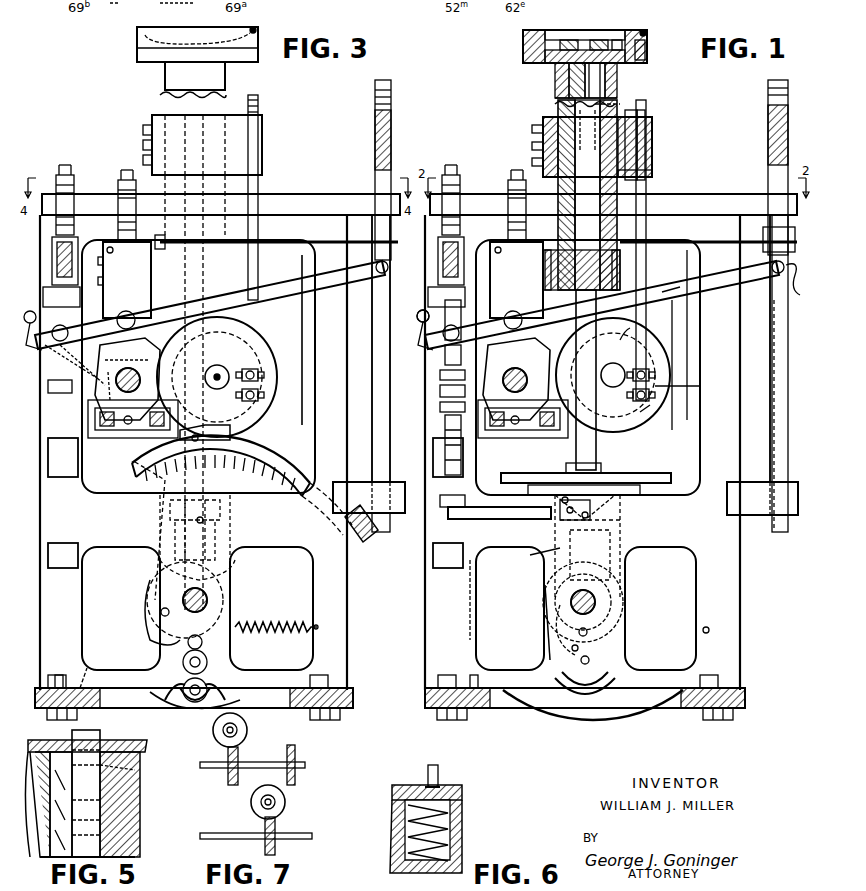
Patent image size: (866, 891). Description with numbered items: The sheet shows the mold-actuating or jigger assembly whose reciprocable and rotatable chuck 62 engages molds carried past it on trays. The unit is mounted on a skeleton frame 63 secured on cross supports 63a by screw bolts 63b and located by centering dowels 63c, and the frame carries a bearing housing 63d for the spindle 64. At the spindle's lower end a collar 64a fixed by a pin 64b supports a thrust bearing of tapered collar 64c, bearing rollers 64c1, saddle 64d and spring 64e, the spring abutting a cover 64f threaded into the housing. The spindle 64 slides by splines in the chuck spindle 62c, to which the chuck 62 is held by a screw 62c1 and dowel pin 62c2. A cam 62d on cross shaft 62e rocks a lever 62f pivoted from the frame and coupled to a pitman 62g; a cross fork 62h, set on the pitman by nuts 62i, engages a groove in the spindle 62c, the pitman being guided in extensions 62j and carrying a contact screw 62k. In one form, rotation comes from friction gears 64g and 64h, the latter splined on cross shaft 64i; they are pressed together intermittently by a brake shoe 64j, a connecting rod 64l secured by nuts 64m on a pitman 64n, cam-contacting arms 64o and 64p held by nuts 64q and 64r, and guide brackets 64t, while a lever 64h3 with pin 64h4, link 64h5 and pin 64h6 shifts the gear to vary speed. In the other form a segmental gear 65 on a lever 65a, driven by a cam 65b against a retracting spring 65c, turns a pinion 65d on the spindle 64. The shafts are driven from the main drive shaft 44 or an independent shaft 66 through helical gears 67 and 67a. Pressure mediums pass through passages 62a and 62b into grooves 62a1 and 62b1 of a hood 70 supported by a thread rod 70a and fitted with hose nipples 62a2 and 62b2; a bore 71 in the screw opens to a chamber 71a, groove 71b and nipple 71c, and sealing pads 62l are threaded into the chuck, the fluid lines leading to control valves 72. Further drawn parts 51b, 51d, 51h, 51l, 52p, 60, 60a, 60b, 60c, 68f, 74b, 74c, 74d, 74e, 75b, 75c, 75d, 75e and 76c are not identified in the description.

In FIG. 7, the main drive shaft 44 is at (265, 762).
In FIG. 3, the stud 51b is at (78, 240).
In FIG. 1, the stud 51b is at (464, 240).
In FIG. 1, the pivot pin 51d is at (430, 318).
In FIG. 3, the cam bracket 51h is at (215, 695).
In FIG. 3, the curved plate 51l is at (200, 712).
In FIG. 1, the slide 52p is at (429, 330).
In FIG. 3, the pin 60 is at (256, 30).
In FIG. 1, the pin 60 is at (646, 33).
In FIG. 6, the pin 60 is at (438, 770).
In FIG. 6, the spring housing 60a is at (462, 815).
In FIG. 6, the cap 60b is at (462, 795).
In FIG. 6, the pin head 60c is at (425, 787).
In FIG. 3, the chuck 62 is at (137, 42).
In FIG. 1, the chuck 62 is at (523, 42).
In FIG. 1, the passage 62a is at (569, 85).
In FIG. 1, the annular air groove 62a1 is at (652, 122).
In FIG. 1, the hose nipple 62a2 is at (532, 129).
In FIG. 1, the passage 62b is at (617, 88).
In FIG. 1, the annular air groove 62b1 is at (652, 150).
In FIG. 1, the hose nipple 62b2 is at (532, 146).
In FIG. 3, the chuck spindle 62c is at (210, 80).
In FIG. 1, the chuck spindle 62c is at (617, 96).
In FIG. 1, the screw 62c1 is at (598, 40).
In FIG. 1, the dowel pin 62c2 is at (565, 40).
In FIG. 1, the cam 62d is at (528, 378).
In FIG. 3, the cross shaft 62e is at (140, 378).
In FIG. 3, the lever 62f is at (318, 275).
In FIG. 1, the lever 62f is at (710, 275).
In FIG. 3, the pitman 62g is at (372, 363).
In FIG. 1, the pitman 62g is at (762, 352).
In FIG. 3, the cross fork 62h is at (283, 242).
In FIG. 1, the cross fork 62h is at (708, 251).
In FIG. 1, the nuts 62i is at (797, 279).
In FIG. 3, the extensions 62j is at (378, 540).
In FIG. 1, the extensions 62j is at (781, 533).
In FIG. 3, the contact screw 62k is at (391, 90).
In FIG. 1, the contact screw 62k is at (768, 100).
In FIG. 1, the sealing and cushioning pads 62l is at (625, 40).
In FIG. 3, the skeleton frame 63 is at (340, 603).
In FIG. 1, the skeleton frame 63 is at (740, 568).
In FIG. 3, the cross supports 63a is at (194, 691).
In FIG. 1, the cross supports 63a is at (745, 698).
In FIG. 3, the screw bolts 63b is at (340, 716).
In FIG. 1, the screw bolts 63b is at (735, 718).
In FIG. 3, the centering dowels 63c is at (90, 668).
In FIG. 1, the centering dowels 63c is at (478, 712).
In FIG. 3, the bearing housing 63d is at (215, 528).
In FIG. 1, the bearing housing 63d is at (620, 540).
In FIG. 5, the bearing housing 63d is at (135, 798).
In FIG. 3, the spindle 64 is at (210, 330).
In FIG. 1, the spindle 64 is at (596, 440).
In FIG. 5, the collar 64a is at (135, 840).
In FIG. 5, the pin 64b is at (30, 813).
In FIG. 5, the tapered collar 64c is at (135, 820).
In FIG. 5, the bearing rollers 64c1 is at (135, 775).
In FIG. 5, the saddle 64d is at (135, 765).
In FIG. 5, the spring 64e is at (140, 750).
In FIG. 3, the cover 64f is at (412, 497).
In FIG. 5, the cover 64f is at (100, 745).
In FIG. 1, the friction gear 64g is at (660, 470).
In FIG. 1, the friction gear 64h is at (590, 720).
In FIG. 1, the lever 64h3 is at (520, 558).
In FIG. 1, the pin 64h4 is at (455, 600).
In FIG. 1, the link 64h5 is at (548, 618).
In FIG. 1, the pin 64h6 is at (535, 636).
In FIG. 3, the cross shaft 64i is at (150, 603).
In FIG. 1, the cross shaft 64i is at (595, 602).
In FIG. 7, the cross shaft 64i is at (252, 806).
In FIG. 1, the brake shoe 64j is at (640, 495).
In FIG. 1, the connecting rod 64l is at (490, 519).
In FIG. 1, the nuts 64m is at (431, 497).
In FIG. 1, the pitman 64n is at (597, 511).
In FIG. 1, the cam-contacting arm 64o is at (431, 399).
In FIG. 1, the cam-contacting arm 64p is at (445, 355).
In FIG. 1, the nuts 64q is at (431, 415).
In FIG. 1, the nuts 64r is at (431, 382).
In FIG. 1, the guide brackets 64t is at (429, 445).
In FIG. 3, the segmental gear 65 is at (292, 465).
In FIG. 3, the lever 65a is at (160, 478).
In FIG. 3, the cam 65b is at (245, 575).
In FIG. 3, the retracting spring 65c is at (275, 635).
In FIG. 3, the pinion 65d is at (225, 430).
In FIG. 7, the independently-driven shaft 66 is at (312, 836).
In FIG. 7, the helical gears 67 is at (225, 785).
In FIG. 7, the helical gears 67a is at (247, 730).
In FIG. 3, the hub 68f is at (217, 365).
In FIG. 1, the hub 68f is at (610, 375).
In FIG. 3, the hood 70 is at (262, 138).
In FIG. 1, the hood 70 is at (652, 135).
In FIG. 3, the thread rod 70a is at (258, 100).
In FIG. 1, the thread rod 70a is at (646, 228).
In FIG. 3, the bore 71 is at (160, 96).
In FIG. 1, the bore 71 is at (595, 106).
In FIG. 1, the chamber 71a is at (582, 195).
In FIG. 1, the groove 71b is at (652, 172).
In FIG. 1, the hose nipple 71c is at (532, 162).
In FIG. 3, the control valves 72 is at (132, 279).
In FIG. 1, the control valves 72 is at (518, 309).
In FIG. 1, the rod 74b is at (688, 365).
In FIG. 1, the arm 74c is at (642, 355).
In FIG. 1, the rod 74d is at (562, 270).
In FIG. 1, the sleeve 74e is at (617, 78).
In FIG. 1, the rod 75b is at (687, 352).
In FIG. 1, the arm 75c is at (620, 331).
In FIG. 1, the rod 75d is at (528, 270).
In FIG. 1, the sleeve 75e is at (555, 75).
In FIG. 1, the pin 76c is at (647, 45).